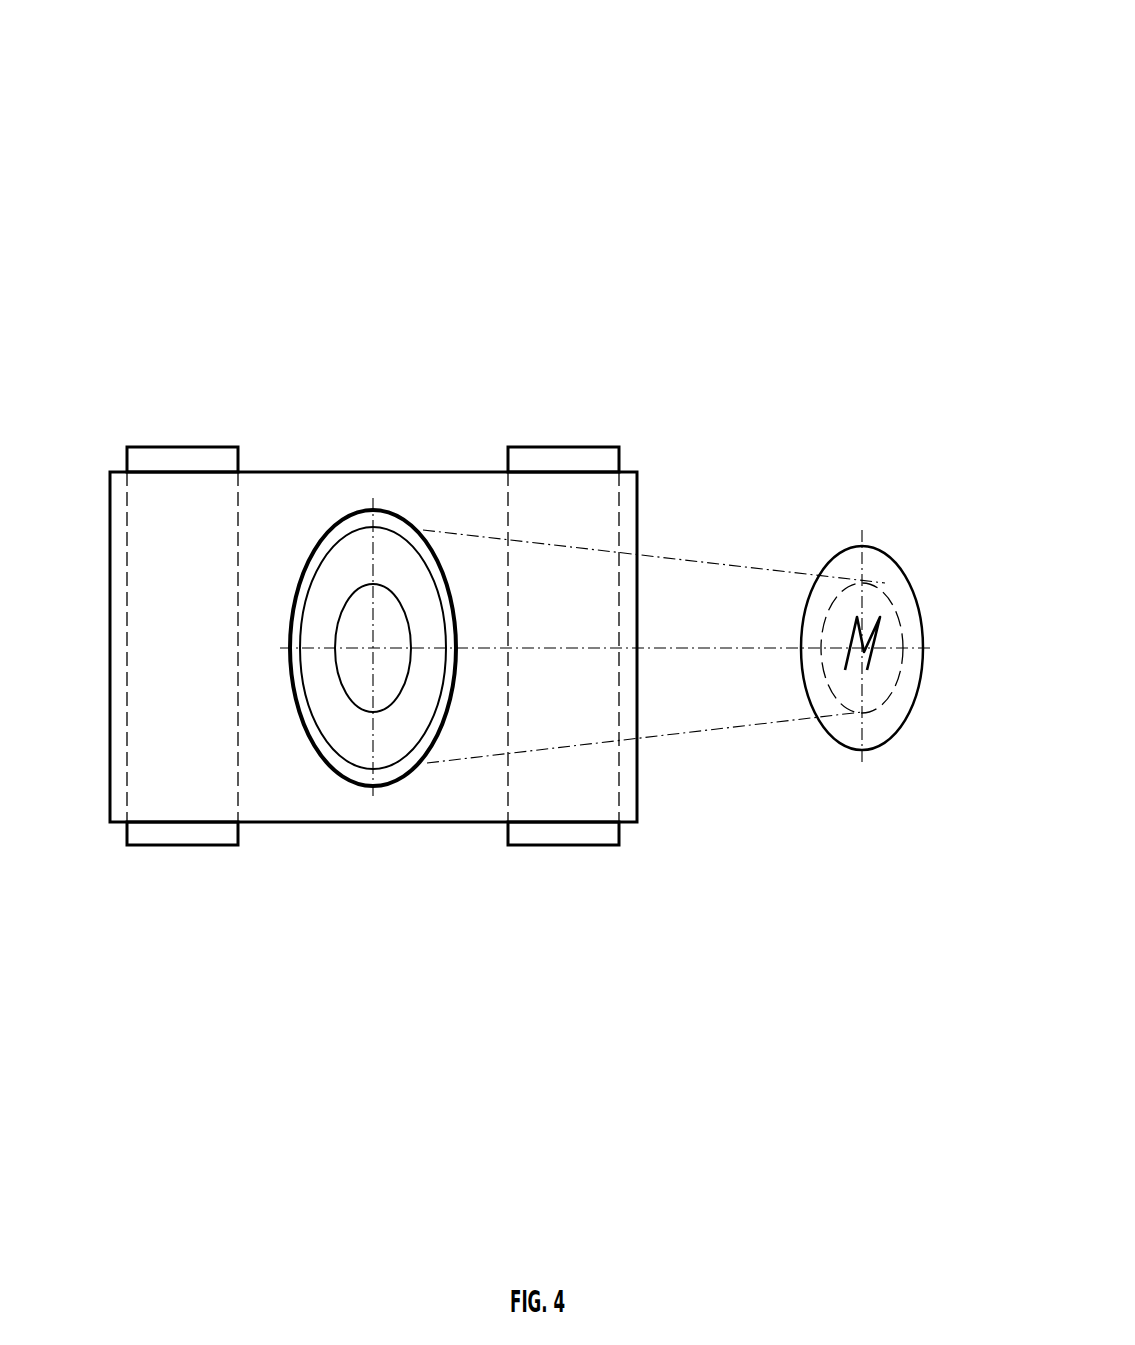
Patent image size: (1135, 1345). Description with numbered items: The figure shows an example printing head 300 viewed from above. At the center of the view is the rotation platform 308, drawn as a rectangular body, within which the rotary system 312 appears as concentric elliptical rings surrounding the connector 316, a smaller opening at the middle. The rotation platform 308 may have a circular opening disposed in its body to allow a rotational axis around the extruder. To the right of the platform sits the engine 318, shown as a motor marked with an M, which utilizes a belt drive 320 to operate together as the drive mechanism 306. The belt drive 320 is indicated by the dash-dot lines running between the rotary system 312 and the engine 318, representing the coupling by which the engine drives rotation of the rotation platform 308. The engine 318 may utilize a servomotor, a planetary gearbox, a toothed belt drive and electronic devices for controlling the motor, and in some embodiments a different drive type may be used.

The printing head 300 is at (706, 80).
The drive mechanism 306 is at (823, 737).
The rotation platform 308 is at (110, 472).
The rotary system 312 is at (321, 528).
The connector 316 is at (355, 690).
The engine 318 is at (898, 604).
The belt drive 320 is at (724, 553).